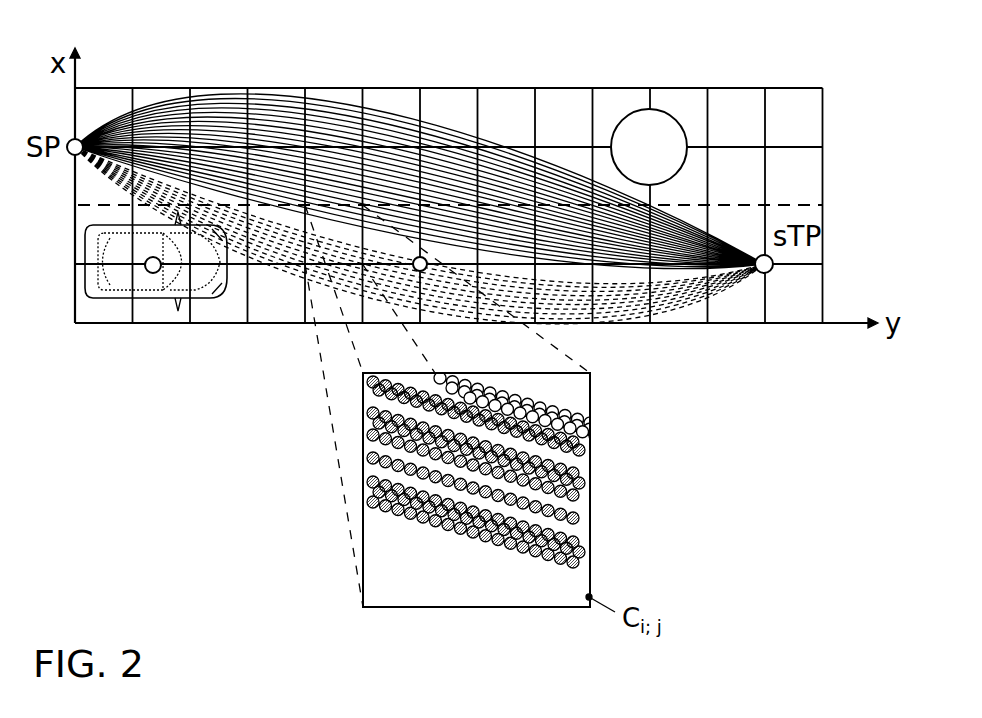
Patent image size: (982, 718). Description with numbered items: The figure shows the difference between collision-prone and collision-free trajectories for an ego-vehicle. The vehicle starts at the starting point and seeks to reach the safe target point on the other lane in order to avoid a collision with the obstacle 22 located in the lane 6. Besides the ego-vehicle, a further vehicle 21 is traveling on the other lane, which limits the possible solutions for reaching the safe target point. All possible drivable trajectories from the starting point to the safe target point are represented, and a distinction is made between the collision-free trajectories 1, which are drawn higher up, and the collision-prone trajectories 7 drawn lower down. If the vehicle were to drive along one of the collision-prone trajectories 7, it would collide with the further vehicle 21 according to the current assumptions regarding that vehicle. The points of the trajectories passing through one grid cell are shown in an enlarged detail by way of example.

The collision-free trajectory 1 is at (297, 123).
The lane 6 is at (509, 107).
The collision-prone trajectories 7 is at (634, 300).
The vehicle 21 is at (155, 290).
The obstacle 22 is at (656, 126).